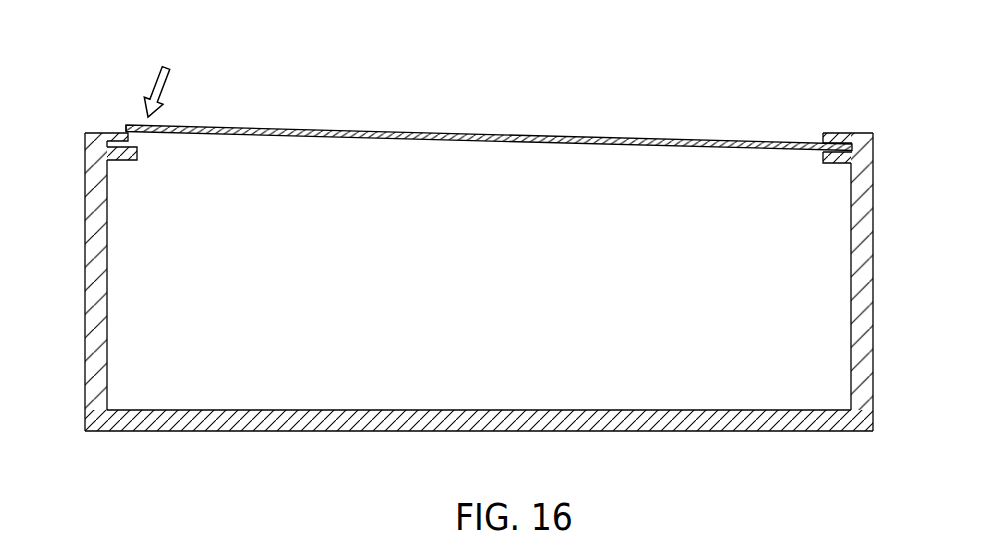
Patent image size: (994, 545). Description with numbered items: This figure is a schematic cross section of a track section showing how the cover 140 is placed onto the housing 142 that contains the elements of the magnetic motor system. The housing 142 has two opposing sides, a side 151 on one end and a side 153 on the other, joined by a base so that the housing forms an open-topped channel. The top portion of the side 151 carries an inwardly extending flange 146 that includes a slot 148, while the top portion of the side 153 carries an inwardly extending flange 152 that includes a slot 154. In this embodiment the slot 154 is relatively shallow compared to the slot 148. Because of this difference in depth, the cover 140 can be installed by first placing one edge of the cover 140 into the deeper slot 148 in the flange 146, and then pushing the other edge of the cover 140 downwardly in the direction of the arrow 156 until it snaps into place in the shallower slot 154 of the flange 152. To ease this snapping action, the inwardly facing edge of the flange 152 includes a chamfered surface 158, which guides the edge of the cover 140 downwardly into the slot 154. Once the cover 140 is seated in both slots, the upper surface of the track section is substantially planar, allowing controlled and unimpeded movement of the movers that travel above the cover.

The cover 140 is at (542, 135).
The housing 142 is at (472, 432).
The inwardly extending flange 146 is at (846, 133).
The slot 148 is at (828, 162).
The side 151 is at (873, 265).
The inwardly extending flange 152 is at (116, 133).
The side 153 is at (85, 290).
The slot 154 is at (133, 145).
The arrow 156 is at (152, 80).
The chamfered surface 158 is at (132, 135).